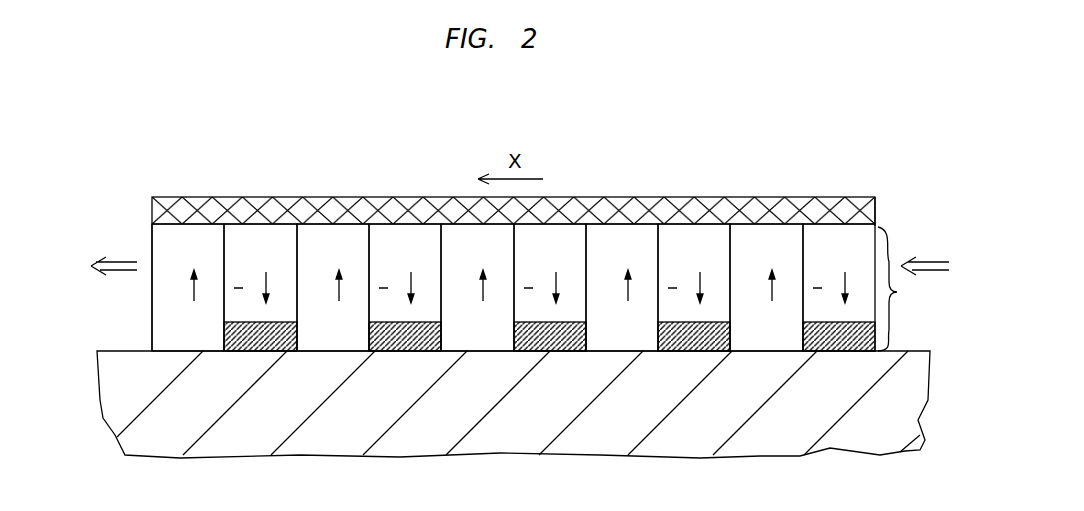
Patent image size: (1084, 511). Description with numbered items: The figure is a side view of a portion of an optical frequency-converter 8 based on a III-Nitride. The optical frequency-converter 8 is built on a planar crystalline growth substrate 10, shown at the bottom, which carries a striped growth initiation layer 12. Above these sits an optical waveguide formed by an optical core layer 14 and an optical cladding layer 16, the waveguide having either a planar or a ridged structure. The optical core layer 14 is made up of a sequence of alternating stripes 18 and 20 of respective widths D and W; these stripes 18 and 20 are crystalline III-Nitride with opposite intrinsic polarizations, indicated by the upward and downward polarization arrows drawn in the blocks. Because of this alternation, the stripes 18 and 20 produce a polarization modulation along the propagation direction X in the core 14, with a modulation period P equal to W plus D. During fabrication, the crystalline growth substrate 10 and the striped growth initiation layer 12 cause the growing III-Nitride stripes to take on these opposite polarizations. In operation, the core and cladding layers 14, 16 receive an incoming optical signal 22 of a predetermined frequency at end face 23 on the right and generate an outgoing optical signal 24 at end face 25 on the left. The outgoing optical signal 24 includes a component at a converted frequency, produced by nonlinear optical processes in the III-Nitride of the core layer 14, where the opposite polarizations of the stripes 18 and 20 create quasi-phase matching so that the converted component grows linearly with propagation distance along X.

The optical frequency-converter 8 is at (634, 137).
The planar crystalline growth substrate 10 is at (457, 423).
The striped growth initiation layer 12 is at (244, 352).
The optical core layer 14 is at (898, 293).
The optical cladding layer 16 is at (706, 197).
The stripes 18 is at (271, 258).
The stripes 20 is at (199, 258).
The incoming optical signal 22 is at (936, 265).
The end face 23 is at (880, 226).
The outgoing optical signal 24 is at (130, 272).
The end face 25 is at (150, 302).